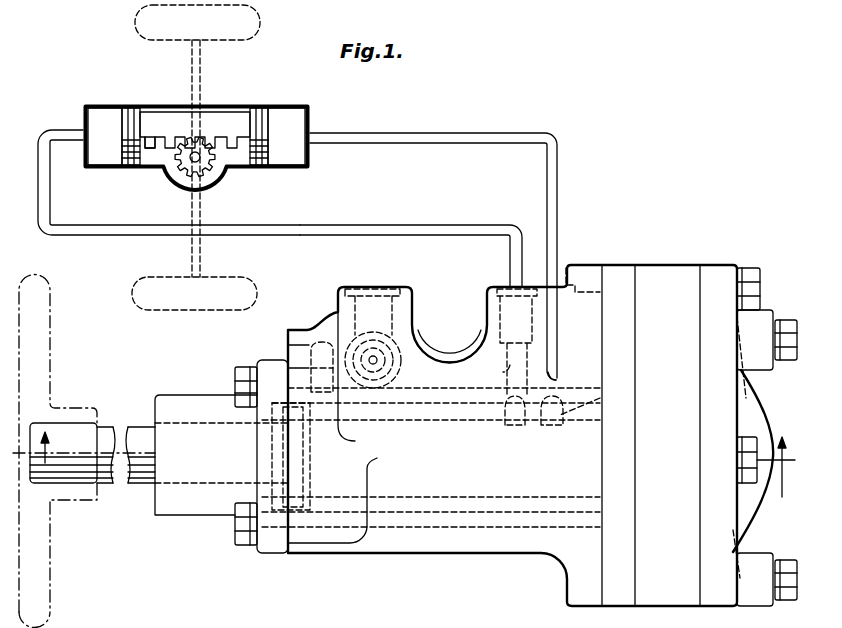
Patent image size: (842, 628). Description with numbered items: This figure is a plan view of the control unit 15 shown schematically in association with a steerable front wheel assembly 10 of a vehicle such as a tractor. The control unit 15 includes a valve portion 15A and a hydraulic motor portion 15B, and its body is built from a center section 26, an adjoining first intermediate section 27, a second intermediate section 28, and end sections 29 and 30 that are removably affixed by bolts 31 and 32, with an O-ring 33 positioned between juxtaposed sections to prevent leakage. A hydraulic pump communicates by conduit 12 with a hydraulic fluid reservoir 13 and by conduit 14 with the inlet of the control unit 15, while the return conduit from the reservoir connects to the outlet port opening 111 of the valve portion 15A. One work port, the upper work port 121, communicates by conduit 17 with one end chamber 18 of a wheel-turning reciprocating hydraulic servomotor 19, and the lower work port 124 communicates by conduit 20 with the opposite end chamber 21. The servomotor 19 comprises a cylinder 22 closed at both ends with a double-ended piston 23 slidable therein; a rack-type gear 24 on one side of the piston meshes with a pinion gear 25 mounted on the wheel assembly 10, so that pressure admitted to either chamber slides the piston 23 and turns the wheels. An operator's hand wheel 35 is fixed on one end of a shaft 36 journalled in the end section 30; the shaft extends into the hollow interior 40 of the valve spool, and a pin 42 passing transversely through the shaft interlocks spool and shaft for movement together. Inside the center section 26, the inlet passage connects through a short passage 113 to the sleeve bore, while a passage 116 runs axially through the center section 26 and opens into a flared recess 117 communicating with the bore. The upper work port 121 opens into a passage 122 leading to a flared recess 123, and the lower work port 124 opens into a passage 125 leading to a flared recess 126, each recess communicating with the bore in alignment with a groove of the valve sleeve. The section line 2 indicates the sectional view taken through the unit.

The section line 2- 2 is at (404, 467).
The steerable front wheel assembly 10 is at (243, 80).
The conduit 12 is at (452, 621).
The hydraulic fluid reservoir 13 is at (587, 622).
The conduit 14 is at (519, 622).
The control unit 15 is at (443, 263).
The valve portion 15A is at (417, 320).
The hydraulic motor portion 15B is at (663, 251).
The conduit 17 is at (462, 228).
The end chamber 18 is at (100, 115).
The hydraulic servomotor 19 is at (246, 177).
The conduit 20 is at (458, 133).
The end chamber 21 is at (295, 125).
The cylinder 22 is at (238, 108).
The double-ended piston 23 is at (152, 118).
The rack-type gear 24 is at (158, 145).
The pinion gear 25 is at (206, 172).
The center section 26 is at (442, 362).
The first intermediate section 27 is at (613, 265).
The second intermediate section 28 is at (678, 265).
The end section 29 is at (715, 265).
The end section 30 is at (196, 379).
The bolts 31 is at (780, 246).
The bolts 32 is at (240, 367).
The O-ring 33 is at (743, 472).
The hand wheel 35 is at (40, 585).
The shaft 36 is at (110, 485).
The hollow interior 40 is at (458, 460).
The pin 42 is at (300, 510).
The outlet port opening 111 is at (383, 293).
The short passage 113 is at (384, 405).
The passage 116 is at (333, 360).
The flared recess 117 is at (312, 360).
The upper work port 121 is at (509, 288).
The passage 122 is at (508, 365).
The flared recess 123 is at (504, 413).
The lower work port 124 is at (566, 268).
The passage 125 is at (552, 365).
The flared recess 126 is at (600, 398).